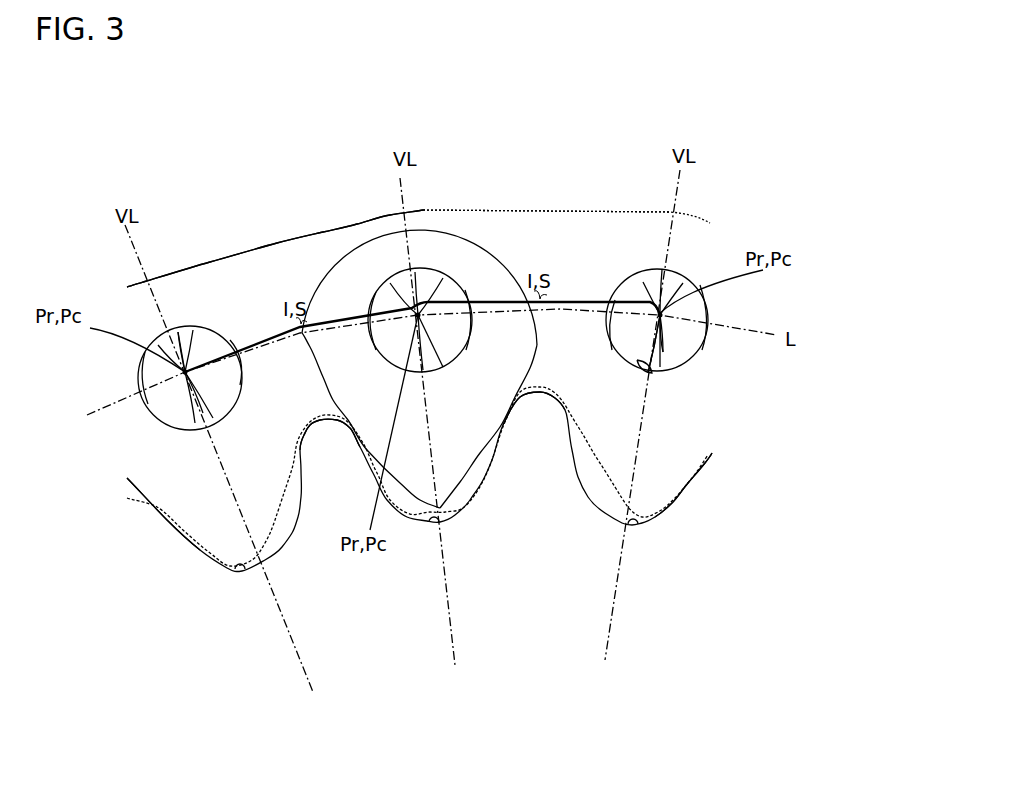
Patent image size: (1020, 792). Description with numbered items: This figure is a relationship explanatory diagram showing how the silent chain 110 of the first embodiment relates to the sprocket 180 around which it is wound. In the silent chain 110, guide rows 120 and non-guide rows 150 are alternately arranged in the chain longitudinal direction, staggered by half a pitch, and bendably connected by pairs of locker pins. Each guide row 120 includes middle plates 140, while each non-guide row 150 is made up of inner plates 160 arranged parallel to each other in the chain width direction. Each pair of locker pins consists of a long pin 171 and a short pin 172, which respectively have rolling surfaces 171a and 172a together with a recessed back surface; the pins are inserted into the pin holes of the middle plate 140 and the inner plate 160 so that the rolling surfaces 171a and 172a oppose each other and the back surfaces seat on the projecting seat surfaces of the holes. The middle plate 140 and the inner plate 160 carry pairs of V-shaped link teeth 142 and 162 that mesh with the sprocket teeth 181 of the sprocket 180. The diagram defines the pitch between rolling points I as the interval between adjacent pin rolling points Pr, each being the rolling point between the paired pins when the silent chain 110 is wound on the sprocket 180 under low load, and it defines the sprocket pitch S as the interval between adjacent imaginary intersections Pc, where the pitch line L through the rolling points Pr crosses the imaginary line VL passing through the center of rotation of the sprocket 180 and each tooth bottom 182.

The silent chain 110 is at (633, 100).
The guide row 120 is at (572, 110).
The middle plate 140 is at (550, 233).
The link teeth 142 is at (660, 488).
The non-guide row 150 is at (255, 148).
The inner plate 160 is at (262, 273).
The link teeth 162 is at (237, 542).
The long pin 171 is at (193, 340).
The short pin 172 is at (162, 345).
The rolling surface 171a is at (663, 352).
The rolling surface 172a is at (648, 373).
The sprocket 180 is at (522, 585).
The sprocket teeth 181 is at (350, 480).
The tooth bottom 182 is at (250, 565).